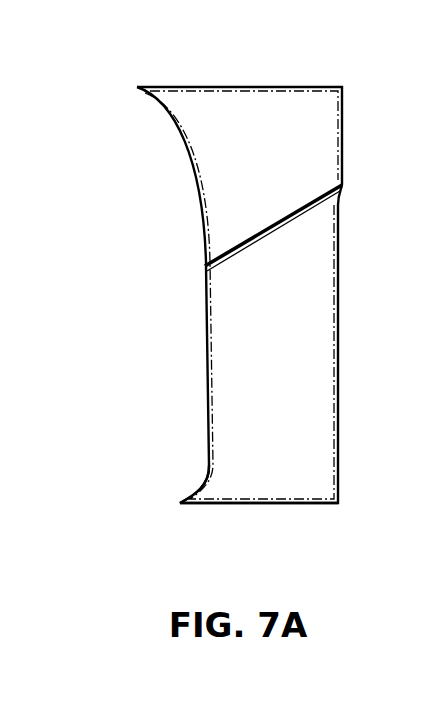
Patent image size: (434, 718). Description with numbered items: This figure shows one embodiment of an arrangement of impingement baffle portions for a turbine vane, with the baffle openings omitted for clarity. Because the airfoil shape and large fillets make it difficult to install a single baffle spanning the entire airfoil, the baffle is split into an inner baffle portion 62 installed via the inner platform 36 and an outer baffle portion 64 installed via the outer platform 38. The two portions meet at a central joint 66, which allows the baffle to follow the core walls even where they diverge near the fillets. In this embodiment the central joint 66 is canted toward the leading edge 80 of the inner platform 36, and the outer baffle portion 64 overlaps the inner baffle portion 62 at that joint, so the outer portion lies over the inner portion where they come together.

The outer platform 38 is at (120, 55).
The inner platform 36 is at (159, 544).
The outer baffle portion 64 is at (272, 167).
The inner baffle portion 62 is at (272, 358).
The central joint 66 is at (203, 263).
The leading edge 80 is at (200, 492).